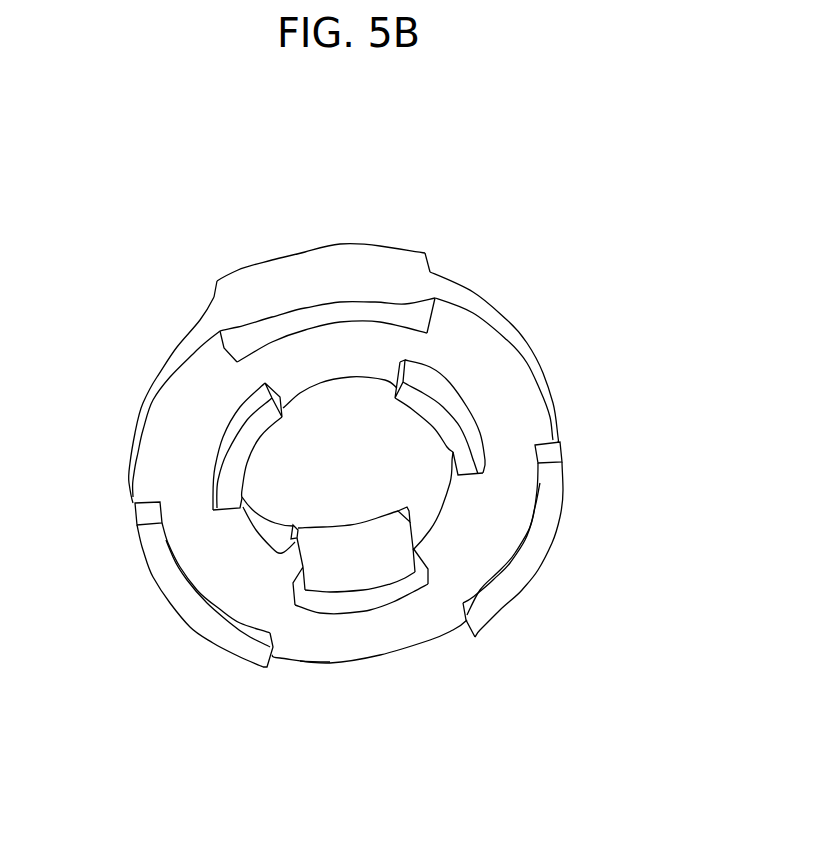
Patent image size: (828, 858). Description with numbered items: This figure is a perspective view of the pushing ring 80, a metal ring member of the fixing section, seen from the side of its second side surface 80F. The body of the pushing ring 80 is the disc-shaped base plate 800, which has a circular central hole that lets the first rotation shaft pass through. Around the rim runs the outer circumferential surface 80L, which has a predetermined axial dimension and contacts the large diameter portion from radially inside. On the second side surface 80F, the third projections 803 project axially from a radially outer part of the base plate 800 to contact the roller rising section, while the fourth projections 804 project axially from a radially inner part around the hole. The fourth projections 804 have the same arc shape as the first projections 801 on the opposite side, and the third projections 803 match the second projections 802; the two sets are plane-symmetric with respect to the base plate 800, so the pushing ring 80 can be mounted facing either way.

The pushing ring 80 is at (543, 220).
The base plate 800 is at (185, 413).
The first projections 801 is at (364, 521).
The second projections 802 is at (326, 241).
The third projections 803 is at (358, 316).
The fourth projections 804 is at (248, 440).
The outer circumferential surface 80L is at (271, 290).
The second side surface 80F is at (328, 626).